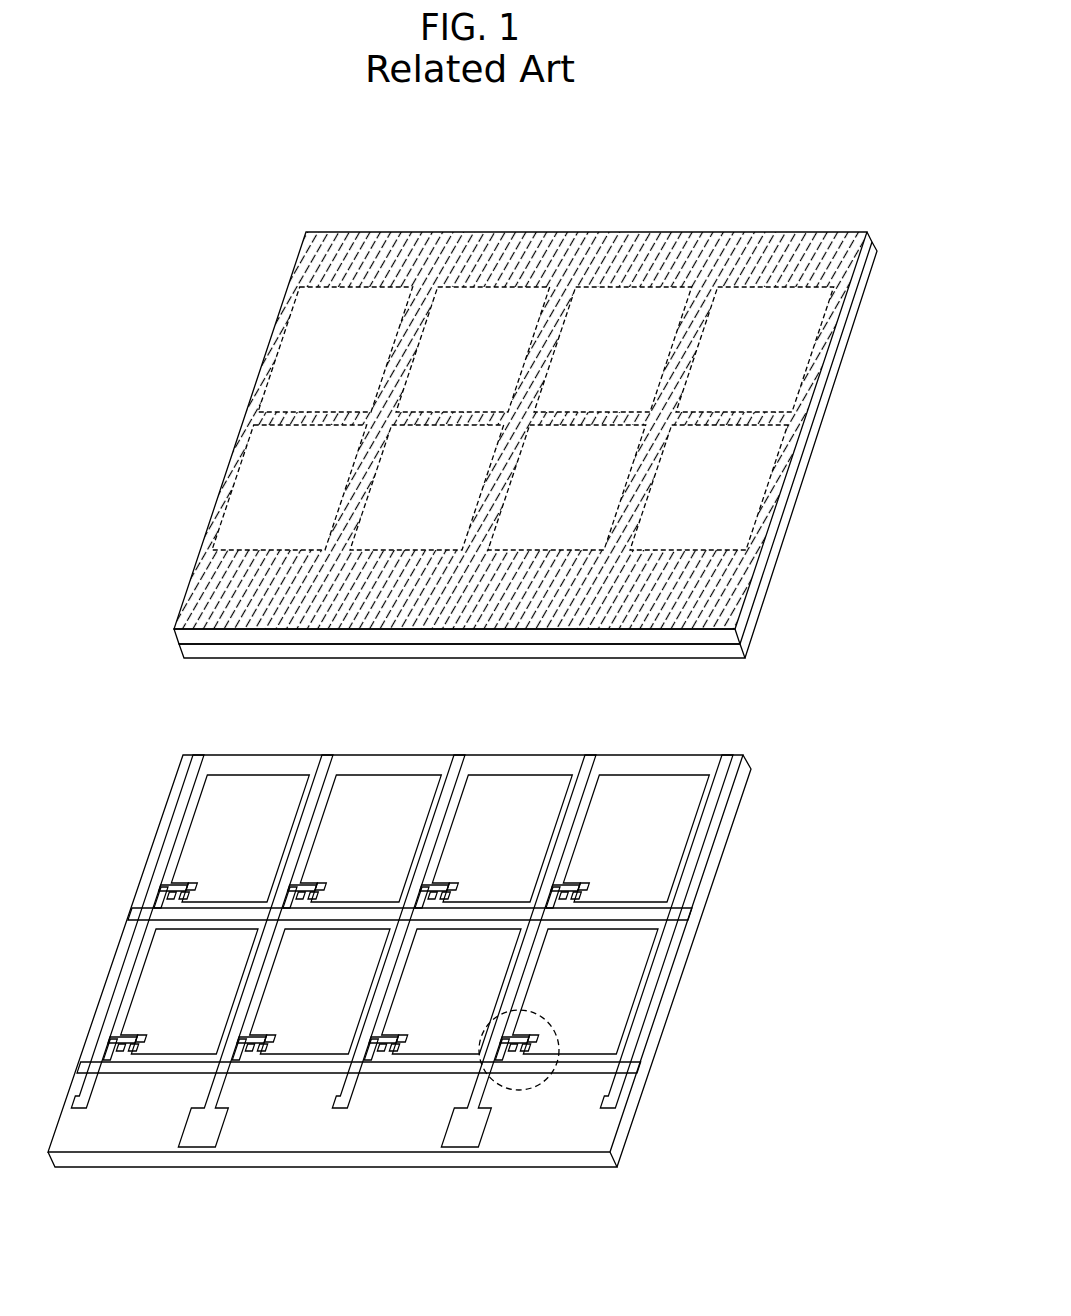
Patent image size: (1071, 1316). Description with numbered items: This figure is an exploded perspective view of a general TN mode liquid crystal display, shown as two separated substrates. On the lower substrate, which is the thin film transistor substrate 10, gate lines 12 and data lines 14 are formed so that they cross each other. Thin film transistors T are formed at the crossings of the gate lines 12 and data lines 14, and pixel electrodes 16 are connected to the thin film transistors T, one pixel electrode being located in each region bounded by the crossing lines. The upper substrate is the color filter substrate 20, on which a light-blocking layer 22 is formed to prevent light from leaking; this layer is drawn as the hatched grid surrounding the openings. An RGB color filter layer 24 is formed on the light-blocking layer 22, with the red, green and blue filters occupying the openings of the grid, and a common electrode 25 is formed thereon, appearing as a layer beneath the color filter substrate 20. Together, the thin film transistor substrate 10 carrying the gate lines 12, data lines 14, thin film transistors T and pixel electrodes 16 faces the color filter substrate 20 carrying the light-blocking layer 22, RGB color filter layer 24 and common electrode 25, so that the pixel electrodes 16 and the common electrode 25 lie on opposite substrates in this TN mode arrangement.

The thin film transistor substrate 10 is at (612, 1170).
The gate lines 12 is at (620, 1070).
The data lines 14 is at (477, 1095).
The pixel electrodes 16 is at (630, 1005).
The thin film transistors T is at (517, 1087).
The color filter substrate 20 is at (727, 638).
The light-blocking layer 22 is at (795, 418).
The RGB color filter layer 24 is at (580, 322).
The common electrode 25 is at (730, 653).